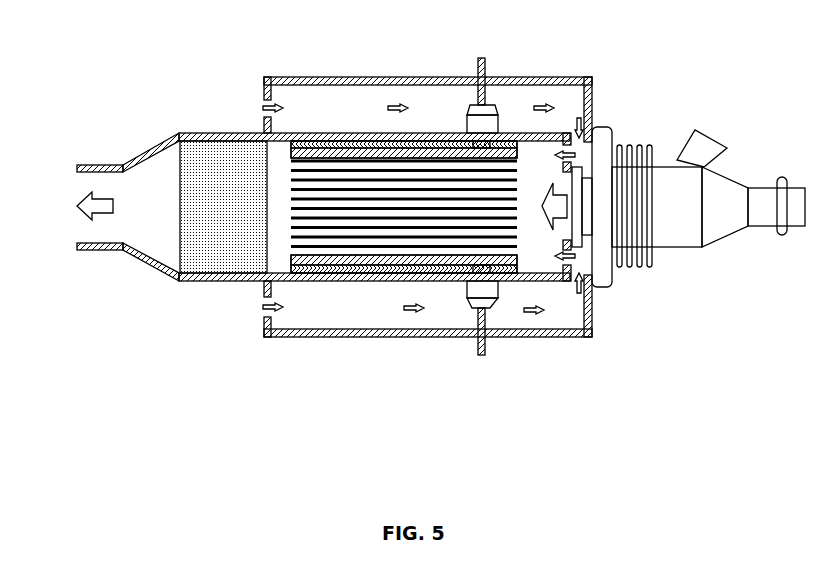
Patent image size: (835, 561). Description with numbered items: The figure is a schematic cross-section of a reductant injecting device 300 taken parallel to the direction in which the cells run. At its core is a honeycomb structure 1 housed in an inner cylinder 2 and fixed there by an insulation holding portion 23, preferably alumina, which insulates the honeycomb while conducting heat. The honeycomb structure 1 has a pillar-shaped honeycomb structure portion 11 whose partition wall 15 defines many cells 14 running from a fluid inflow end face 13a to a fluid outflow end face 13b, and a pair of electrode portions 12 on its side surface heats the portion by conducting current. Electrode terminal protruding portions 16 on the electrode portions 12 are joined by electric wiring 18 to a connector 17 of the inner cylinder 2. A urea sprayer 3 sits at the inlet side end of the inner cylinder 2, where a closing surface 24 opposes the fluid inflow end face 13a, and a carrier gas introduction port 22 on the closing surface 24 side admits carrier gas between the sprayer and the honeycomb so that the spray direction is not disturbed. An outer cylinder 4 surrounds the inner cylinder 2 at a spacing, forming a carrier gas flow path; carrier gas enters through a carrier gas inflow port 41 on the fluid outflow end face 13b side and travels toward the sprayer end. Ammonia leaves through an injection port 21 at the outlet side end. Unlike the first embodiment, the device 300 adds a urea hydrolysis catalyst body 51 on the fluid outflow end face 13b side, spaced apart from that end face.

The honeycomb structure 1 is at (403, 418).
The inner cylinder 2 is at (373, 133).
The urea sprayer 3 is at (666, 198).
The outer cylinder 4 is at (423, 77).
The honeycomb structure portion 11 is at (368, 380).
The electrode portions 12 is at (387, 263).
The fluid inflow end face 13a is at (515, 183).
The fluid outflow end face 13b is at (285, 183).
The cells 14 is at (348, 237).
The partition wall 15 is at (320, 237).
The electrode terminal protruding portions 16 is at (573, 262).
The connector 17 is at (512, 280).
The electric wiring 18 is at (490, 342).
The injection port 21 is at (83, 233).
The carrier gas introduction port 22 is at (583, 270).
The insulation holding portion 23 is at (433, 273).
The closing surface 24 is at (610, 138).
The carrier gas inflow port 41 is at (268, 100).
The urea hydrolysis catalyst body 51 is at (215, 260).
The reductant injecting device 300 is at (485, 473).